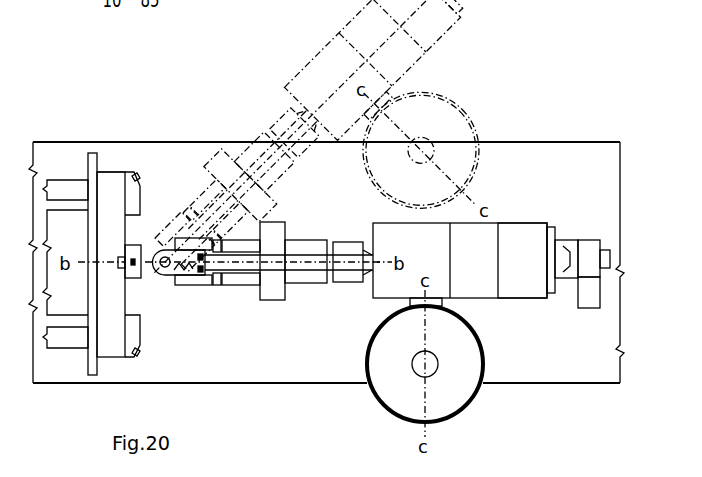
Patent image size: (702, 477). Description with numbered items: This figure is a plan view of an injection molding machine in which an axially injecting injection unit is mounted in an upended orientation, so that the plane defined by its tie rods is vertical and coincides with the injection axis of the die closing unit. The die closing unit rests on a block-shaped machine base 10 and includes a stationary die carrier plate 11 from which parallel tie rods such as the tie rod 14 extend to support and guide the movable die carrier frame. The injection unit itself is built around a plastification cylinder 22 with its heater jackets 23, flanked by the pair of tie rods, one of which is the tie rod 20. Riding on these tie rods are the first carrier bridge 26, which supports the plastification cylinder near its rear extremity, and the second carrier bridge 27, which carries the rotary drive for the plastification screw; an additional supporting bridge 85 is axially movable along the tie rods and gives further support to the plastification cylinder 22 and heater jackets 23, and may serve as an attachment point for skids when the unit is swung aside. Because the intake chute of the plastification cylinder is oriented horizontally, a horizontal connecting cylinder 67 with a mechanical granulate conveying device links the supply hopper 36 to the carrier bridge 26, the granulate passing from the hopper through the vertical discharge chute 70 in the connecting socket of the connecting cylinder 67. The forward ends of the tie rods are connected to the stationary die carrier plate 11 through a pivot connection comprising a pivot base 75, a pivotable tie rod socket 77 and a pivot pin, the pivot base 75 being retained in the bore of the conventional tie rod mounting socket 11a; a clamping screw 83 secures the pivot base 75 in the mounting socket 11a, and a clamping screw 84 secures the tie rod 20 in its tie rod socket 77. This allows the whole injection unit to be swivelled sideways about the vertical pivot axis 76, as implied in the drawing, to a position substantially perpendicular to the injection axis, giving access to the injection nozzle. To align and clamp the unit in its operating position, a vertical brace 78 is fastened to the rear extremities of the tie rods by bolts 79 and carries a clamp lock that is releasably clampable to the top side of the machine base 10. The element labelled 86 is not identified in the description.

The machine base 10 is at (251, 362).
The stationary die carrier plate 11 is at (110, 180).
The tie rod mounting socket 11a is at (145, 173).
The tie rod 14 is at (63, 338).
The tie rod 20 is at (275, 127).
The plastification cylinder 22 is at (229, 284).
The heater jackets 23 is at (251, 284).
The carrier bridge 26 is at (327, 80).
The carrier bridge 27 is at (523, 268).
The supply hopper 36 is at (487, 152).
The connecting cylinder 67 is at (428, 307).
The discharge chute 70 is at (442, 138).
The pivot base 75 is at (150, 279).
The vertical pivot axis 76 is at (158, 248).
The tie rod socket 77 is at (183, 285).
The vertical brace 78 is at (588, 258).
The bolts 79 is at (605, 268).
The clamping screw 83 is at (138, 351).
The clamping screw 84 is at (200, 284).
The supporting bridge 85 is at (208, 152).
The block 86 is at (66, 233).